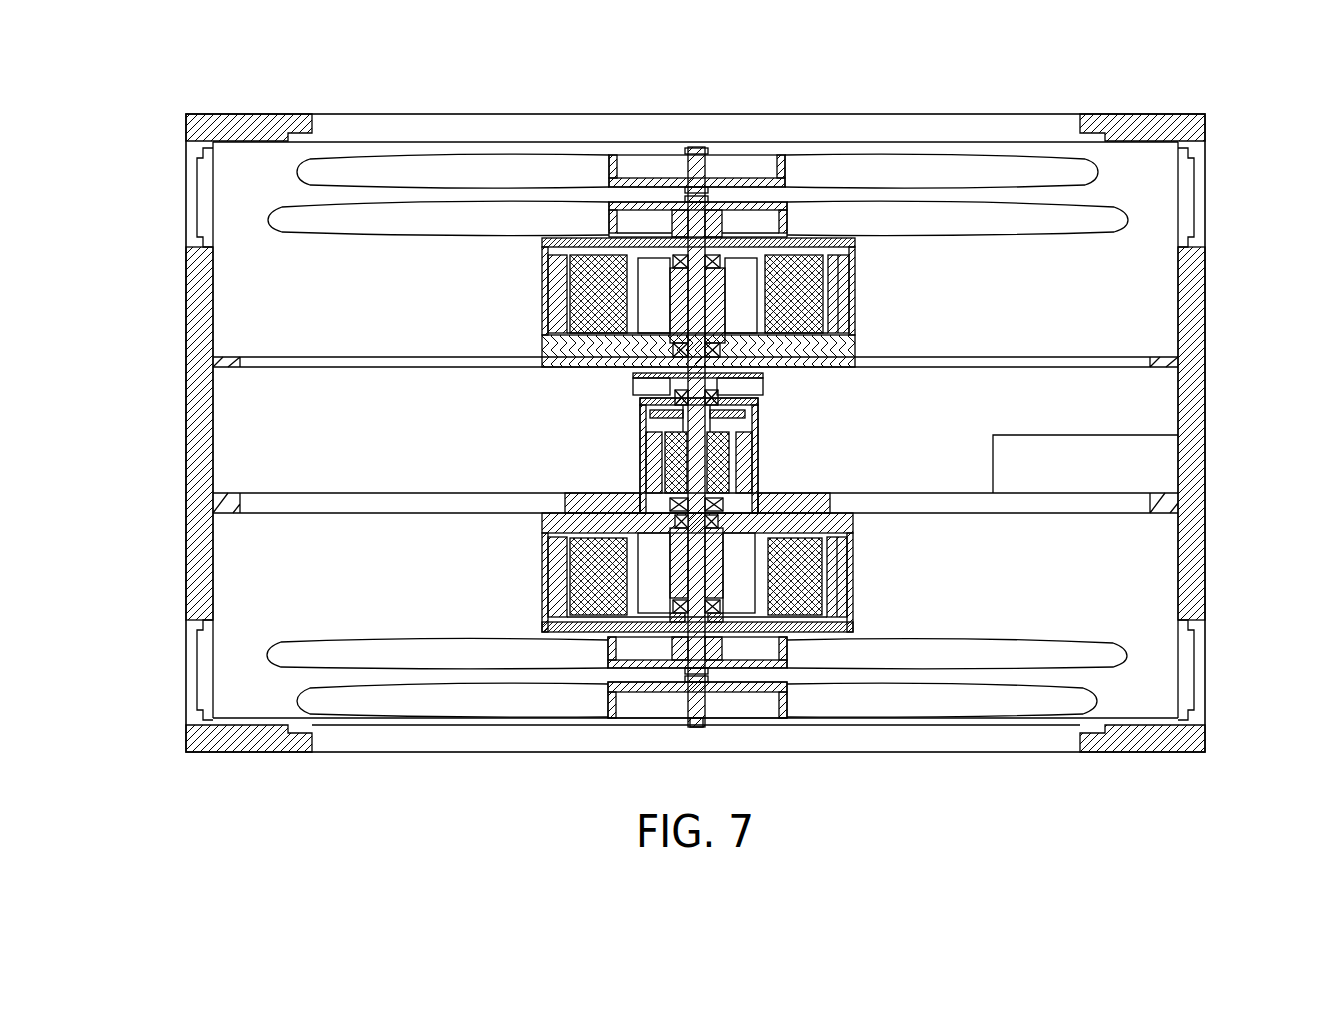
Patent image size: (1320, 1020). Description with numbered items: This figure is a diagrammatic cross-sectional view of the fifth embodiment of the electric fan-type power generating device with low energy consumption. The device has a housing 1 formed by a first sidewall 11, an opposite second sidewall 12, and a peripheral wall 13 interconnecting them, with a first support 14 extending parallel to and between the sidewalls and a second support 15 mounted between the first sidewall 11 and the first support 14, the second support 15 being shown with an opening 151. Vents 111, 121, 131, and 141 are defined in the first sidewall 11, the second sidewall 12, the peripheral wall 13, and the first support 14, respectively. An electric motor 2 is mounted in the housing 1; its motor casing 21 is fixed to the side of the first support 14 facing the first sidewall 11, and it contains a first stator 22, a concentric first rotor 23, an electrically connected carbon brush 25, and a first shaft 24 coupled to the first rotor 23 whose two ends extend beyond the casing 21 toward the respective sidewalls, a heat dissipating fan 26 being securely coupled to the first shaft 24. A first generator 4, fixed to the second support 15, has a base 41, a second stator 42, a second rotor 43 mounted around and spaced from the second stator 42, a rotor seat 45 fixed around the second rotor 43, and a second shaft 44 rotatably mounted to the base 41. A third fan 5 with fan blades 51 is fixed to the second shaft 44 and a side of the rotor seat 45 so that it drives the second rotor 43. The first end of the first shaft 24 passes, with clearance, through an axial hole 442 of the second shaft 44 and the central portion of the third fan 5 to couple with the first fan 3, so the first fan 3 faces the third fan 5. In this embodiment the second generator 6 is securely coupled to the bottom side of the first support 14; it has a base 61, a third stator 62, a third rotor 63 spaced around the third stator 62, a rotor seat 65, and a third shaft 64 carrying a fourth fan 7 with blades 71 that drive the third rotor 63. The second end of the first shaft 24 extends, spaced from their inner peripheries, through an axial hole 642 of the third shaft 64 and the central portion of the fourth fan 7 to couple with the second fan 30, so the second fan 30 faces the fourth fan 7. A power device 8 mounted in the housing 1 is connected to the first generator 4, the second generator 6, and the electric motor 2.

The housing 1 is at (1138, 113).
The first sidewall 11 is at (805, 114).
The vent 111 is at (510, 140).
The second sidewall 12 is at (867, 752).
The vent 121 is at (540, 737).
The peripheral wall 13 is at (186, 403).
The vent 131 is at (197, 197).
The first support 14 is at (560, 505).
The vent 141 is at (946, 493).
The second support 15 is at (583, 368).
The opening of upper partition plate 151 is at (337, 357).
The electric motor 2 is at (716, 443).
The motor casing 21 is at (758, 445).
The first stator 22 is at (740, 470).
The first rotor 23 is at (665, 468).
The first shaft 24 is at (690, 428).
The carbon brush 25 is at (750, 420).
The heat dissipating fan 26 is at (762, 383).
The first fan 3 is at (698, 180).
The second fan 30 is at (697, 689).
The first generator 4 is at (691, 302).
The base 41 is at (795, 347).
The second stator 42 is at (590, 288).
The second rotor 43 is at (842, 295).
The second shaft 44 is at (712, 328).
The rotor seat 45 is at (855, 263).
The axial hole 442 is at (642, 327).
The third fan 5 is at (1001, 212).
The fan blades 51 is at (385, 212).
The second generator 6 is at (696, 572).
The base 61 is at (815, 525).
The third stator 62 is at (845, 590).
The third rotor 63 is at (552, 595).
The third shaft 64 is at (565, 553).
The rotor seat 65 is at (542, 572).
The axial hole 642 is at (795, 553).
The fourth fan 7 is at (439, 699).
The blades 71 is at (952, 700).
The power device 8 is at (1063, 470).